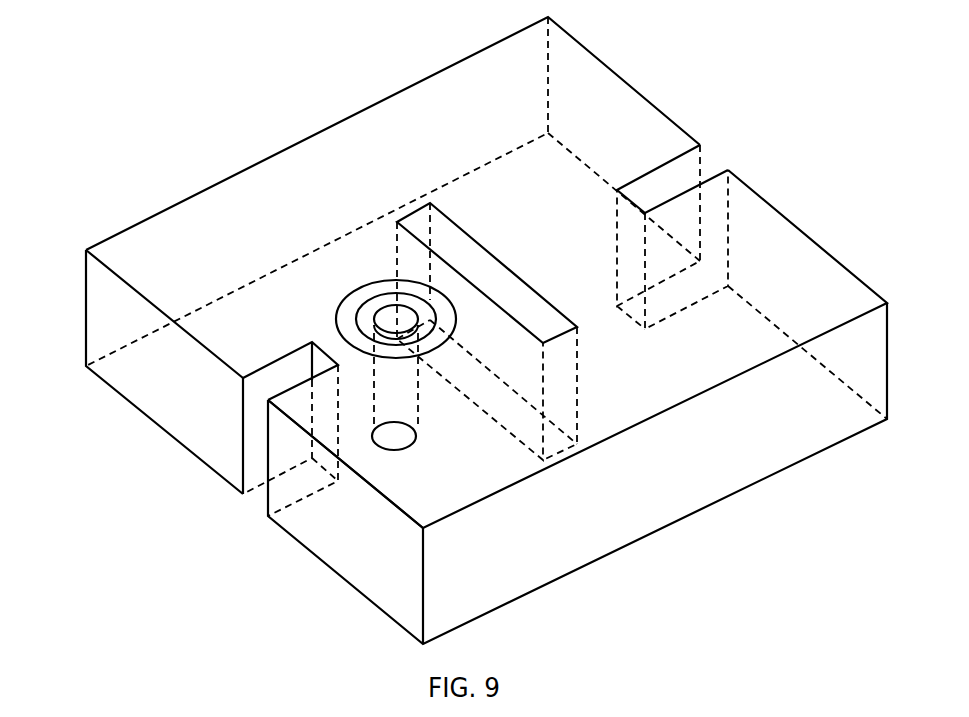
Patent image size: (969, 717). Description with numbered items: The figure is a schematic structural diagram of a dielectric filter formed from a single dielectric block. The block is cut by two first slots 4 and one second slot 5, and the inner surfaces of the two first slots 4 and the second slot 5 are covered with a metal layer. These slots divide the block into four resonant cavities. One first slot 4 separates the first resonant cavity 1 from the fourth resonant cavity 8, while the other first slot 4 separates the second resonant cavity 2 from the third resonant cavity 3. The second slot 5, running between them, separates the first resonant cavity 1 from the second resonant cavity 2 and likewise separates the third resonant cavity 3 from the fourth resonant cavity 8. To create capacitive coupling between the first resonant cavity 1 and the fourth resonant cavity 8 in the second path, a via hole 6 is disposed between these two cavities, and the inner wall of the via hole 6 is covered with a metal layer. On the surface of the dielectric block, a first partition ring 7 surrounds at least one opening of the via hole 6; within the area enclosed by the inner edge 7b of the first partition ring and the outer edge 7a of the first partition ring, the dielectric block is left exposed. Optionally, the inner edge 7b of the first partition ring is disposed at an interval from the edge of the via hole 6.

The first resonant cavity 1 is at (247, 320).
The second resonant cavity 2 is at (528, 160).
The third resonant cavity 3 is at (698, 328).
The first slot 4 is at (285, 378).
The second slot 5 is at (482, 268).
The via hole 6 is at (395, 325).
The first partition ring 7 is at (362, 295).
The outer edge of the first partition ring 7a is at (335, 315).
The inner edge of the first partition ring 7b is at (400, 300).
The fourth resonant cavity 8 is at (422, 483).